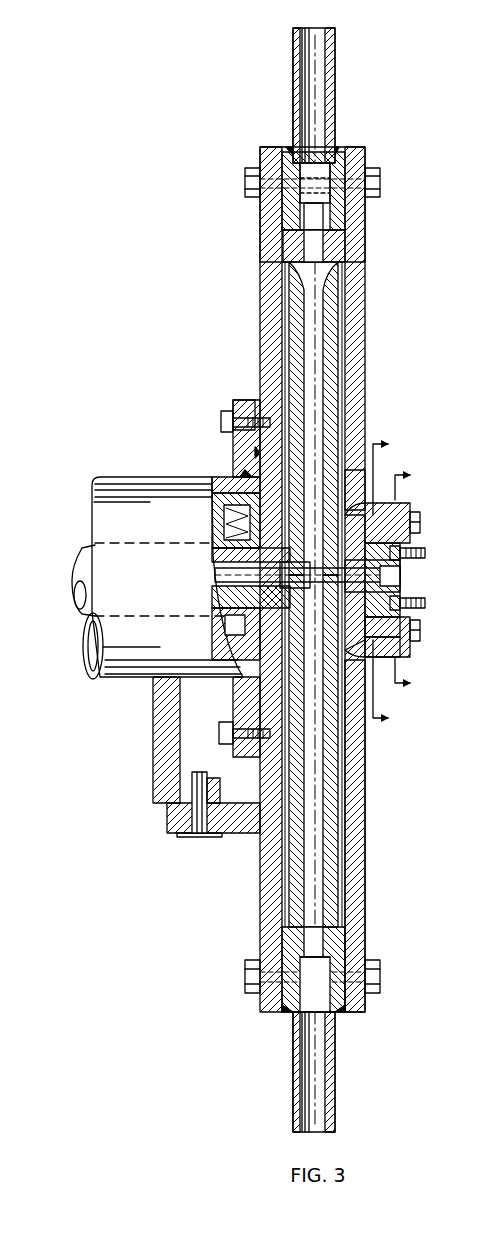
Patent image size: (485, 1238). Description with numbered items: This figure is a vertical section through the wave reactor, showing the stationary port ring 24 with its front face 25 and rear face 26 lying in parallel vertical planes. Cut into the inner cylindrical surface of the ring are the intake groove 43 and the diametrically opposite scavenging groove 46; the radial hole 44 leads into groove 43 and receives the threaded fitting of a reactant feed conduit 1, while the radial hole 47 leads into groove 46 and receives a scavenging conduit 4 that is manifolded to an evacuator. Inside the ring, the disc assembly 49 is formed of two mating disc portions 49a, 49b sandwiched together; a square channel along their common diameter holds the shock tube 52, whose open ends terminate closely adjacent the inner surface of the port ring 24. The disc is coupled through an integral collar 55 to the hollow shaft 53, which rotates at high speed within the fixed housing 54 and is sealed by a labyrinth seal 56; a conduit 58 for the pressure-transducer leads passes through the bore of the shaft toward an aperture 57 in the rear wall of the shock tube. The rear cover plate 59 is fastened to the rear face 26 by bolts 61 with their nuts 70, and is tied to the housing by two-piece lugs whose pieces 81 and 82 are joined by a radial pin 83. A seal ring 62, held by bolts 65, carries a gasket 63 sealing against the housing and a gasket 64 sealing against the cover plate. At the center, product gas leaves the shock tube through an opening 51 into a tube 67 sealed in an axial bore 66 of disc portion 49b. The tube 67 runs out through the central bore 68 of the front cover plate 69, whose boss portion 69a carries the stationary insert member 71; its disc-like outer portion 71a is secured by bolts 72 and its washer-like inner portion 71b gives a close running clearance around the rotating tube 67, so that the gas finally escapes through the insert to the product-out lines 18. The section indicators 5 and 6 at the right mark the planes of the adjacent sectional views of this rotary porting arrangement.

The reactant material feed conduits 1 is at (338, 1072).
The scavenging conduits 4 is at (337, 72).
The section line 5 is at (389, 581).
The section line 6 is at (414, 579).
The product out lines 18 is at (426, 555).
The stationary port ring 24 is at (352, 156).
The front face 25 is at (345, 204).
The rear face 26 is at (300, 200).
The arcuately-elongated groove 43 is at (320, 943).
The radially-extending hole 44 is at (287, 1013).
The arcuately-elongated groove 46 is at (320, 222).
The radially-extending hole 47 is at (300, 216).
The disc assembly 49 is at (342, 777).
The disc portion 49a is at (296, 852).
The disc portion 49b is at (330, 843).
The opening 51 is at (250, 618).
The shock tube 52 is at (312, 337).
The hollow shaft 53 is at (82, 577).
The housing 54 is at (136, 664).
The collar 55 is at (245, 535).
The labyrinth seal 56 is at (232, 545).
The aperture 57 is at (248, 605).
The conduit 58 is at (260, 572).
The rear cover plate 59 is at (272, 295).
The bolts 61 is at (253, 183).
The seal ring 62 is at (245, 455).
The gasket 63 is at (243, 485).
The gasket 64 is at (240, 445).
The bolts 65 is at (228, 410).
The axial bore 66 is at (375, 505).
The tube 67 is at (400, 576).
The central axial bore 68 is at (378, 642).
The front cover plate 69 is at (352, 293).
The boss portion 69a is at (395, 500).
The nuts 70 is at (372, 182).
The insert member 71 is at (412, 588).
The outer portion 71a is at (400, 650).
The inner washer-like portion 71b is at (390, 660).
The bolts 72 is at (421, 519).
The lug piece 81 is at (168, 725).
The lug piece 82 is at (178, 825).
The radial pin 83 is at (200, 797).